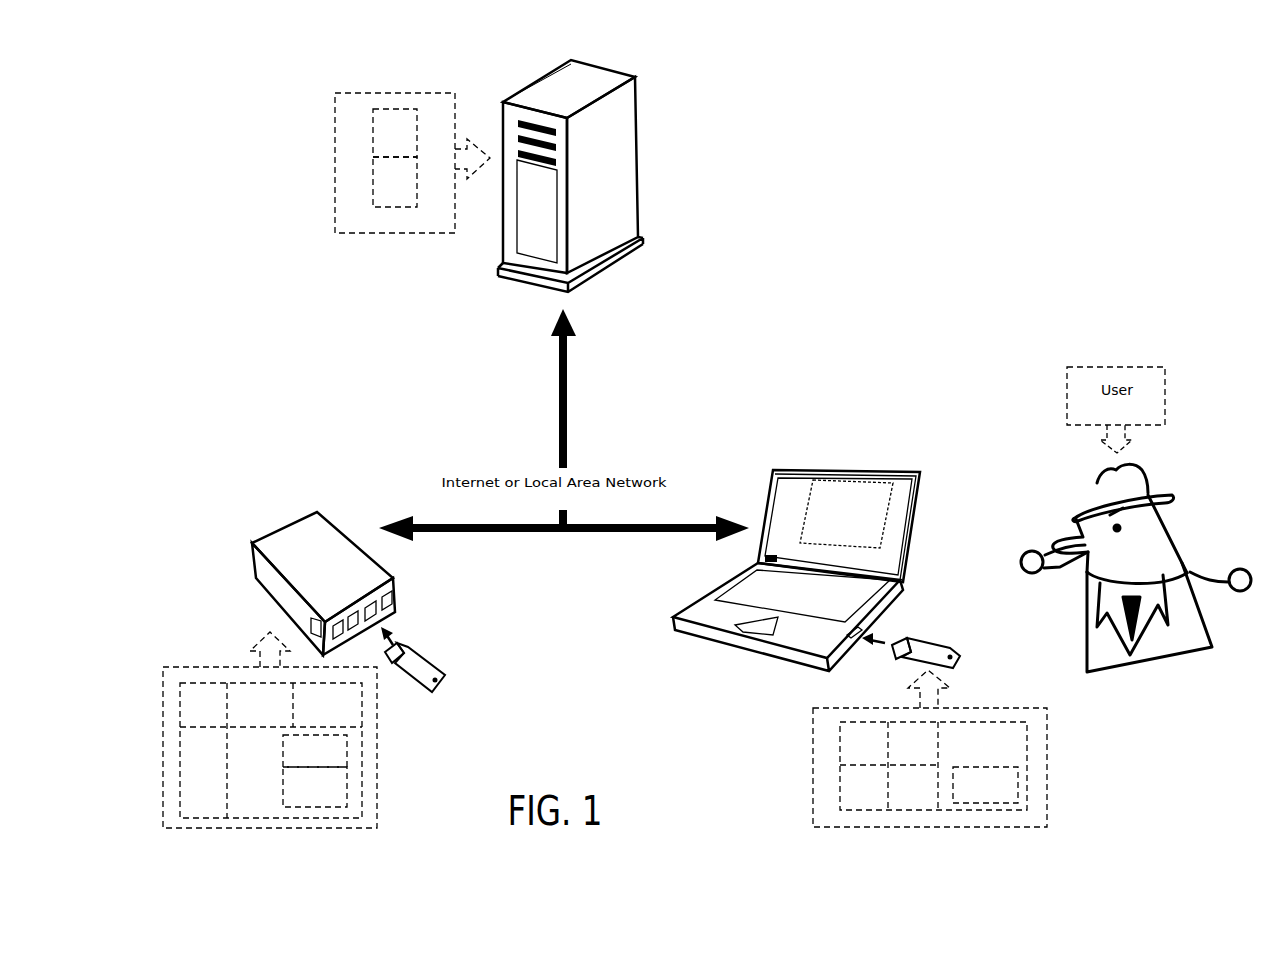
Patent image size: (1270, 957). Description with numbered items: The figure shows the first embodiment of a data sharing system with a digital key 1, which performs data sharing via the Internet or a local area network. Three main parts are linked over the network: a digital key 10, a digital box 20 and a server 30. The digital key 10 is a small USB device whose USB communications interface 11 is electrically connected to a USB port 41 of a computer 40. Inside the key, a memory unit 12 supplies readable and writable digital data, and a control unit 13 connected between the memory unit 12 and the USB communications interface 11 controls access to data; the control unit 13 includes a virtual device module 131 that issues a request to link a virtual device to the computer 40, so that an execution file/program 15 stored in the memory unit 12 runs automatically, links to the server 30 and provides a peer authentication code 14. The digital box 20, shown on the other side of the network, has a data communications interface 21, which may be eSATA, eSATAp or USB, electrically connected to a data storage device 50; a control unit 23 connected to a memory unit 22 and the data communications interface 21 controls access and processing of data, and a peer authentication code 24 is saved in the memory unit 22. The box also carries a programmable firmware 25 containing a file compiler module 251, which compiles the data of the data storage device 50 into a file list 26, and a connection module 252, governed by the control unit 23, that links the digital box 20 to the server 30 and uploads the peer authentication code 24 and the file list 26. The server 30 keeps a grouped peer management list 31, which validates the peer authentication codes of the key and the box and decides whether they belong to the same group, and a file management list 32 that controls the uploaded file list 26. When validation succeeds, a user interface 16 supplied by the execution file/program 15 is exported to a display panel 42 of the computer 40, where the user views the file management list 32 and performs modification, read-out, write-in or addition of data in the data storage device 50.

The data sharing system with a digital key 1 is at (968, 193).
The digital key 10 is at (957, 657).
The USB communications interface 11 is at (864, 743).
The memory unit 12 is at (864, 787).
The control unit 13 is at (982, 766).
The virtual device module 131 is at (985, 785).
The peer authentication code 14 is at (913, 743).
The execution file/program 15 is at (913, 787).
The user interface 16 is at (860, 500).
The digital box 20 is at (331, 568).
The data communications interface 21 is at (396, 603).
The memory unit 22 is at (203, 705).
The control unit 23 is at (260, 705).
The peer authentication code 24 is at (327, 705).
The programmable firmware 25 is at (294, 772).
The file compiler module 251 is at (315, 752).
The connection module 252 is at (315, 787).
The file list 26 is at (203, 772).
The server 30 is at (620, 153).
The grouped peer management list 31 is at (395, 133).
The file management list 32 is at (395, 182).
The computer 40 is at (833, 532).
The USB port 41 is at (873, 627).
The display panel 42 is at (897, 513).
The data storage device 50 is at (443, 690).